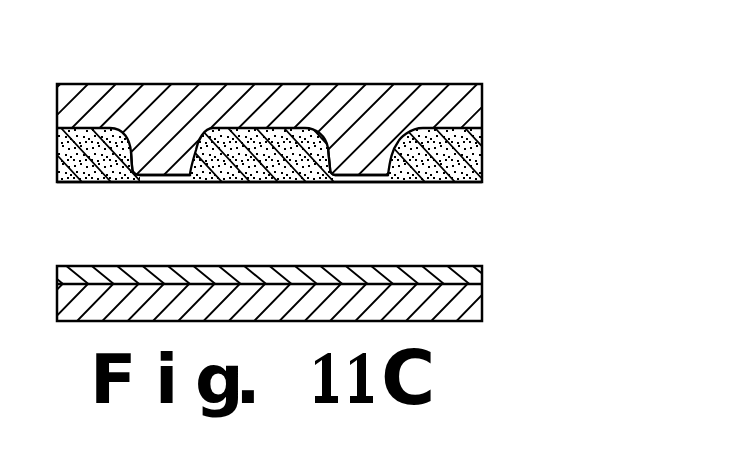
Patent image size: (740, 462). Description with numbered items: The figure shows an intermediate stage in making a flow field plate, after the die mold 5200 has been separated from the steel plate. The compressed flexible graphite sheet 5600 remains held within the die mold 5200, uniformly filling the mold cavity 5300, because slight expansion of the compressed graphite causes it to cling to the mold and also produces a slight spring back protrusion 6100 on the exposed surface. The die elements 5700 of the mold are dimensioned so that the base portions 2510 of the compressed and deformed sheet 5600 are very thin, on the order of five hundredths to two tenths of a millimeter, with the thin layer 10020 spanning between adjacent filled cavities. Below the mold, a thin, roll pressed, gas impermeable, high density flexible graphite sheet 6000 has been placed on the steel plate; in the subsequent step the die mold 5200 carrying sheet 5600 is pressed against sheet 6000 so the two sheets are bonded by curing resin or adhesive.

The die mold 5200 is at (463, 84).
The mold cavity 5300 is at (231, 88).
The compressed flexible graphite sheet 5600 is at (84, 148).
The die elements 5700 is at (165, 168).
The spring back protrusion 6100 is at (88, 162).
The thin layer top 10020 is at (167, 178).
The base portions 2510 is at (172, 172).
The flexible graphite sheet 6000 is at (483, 275).